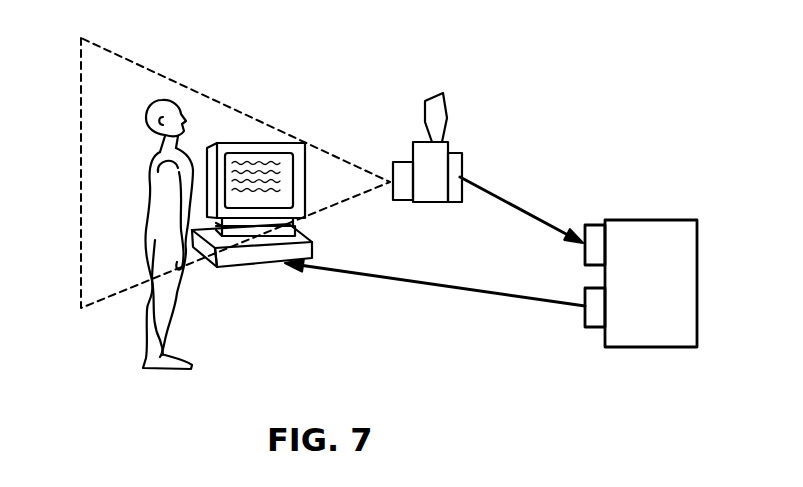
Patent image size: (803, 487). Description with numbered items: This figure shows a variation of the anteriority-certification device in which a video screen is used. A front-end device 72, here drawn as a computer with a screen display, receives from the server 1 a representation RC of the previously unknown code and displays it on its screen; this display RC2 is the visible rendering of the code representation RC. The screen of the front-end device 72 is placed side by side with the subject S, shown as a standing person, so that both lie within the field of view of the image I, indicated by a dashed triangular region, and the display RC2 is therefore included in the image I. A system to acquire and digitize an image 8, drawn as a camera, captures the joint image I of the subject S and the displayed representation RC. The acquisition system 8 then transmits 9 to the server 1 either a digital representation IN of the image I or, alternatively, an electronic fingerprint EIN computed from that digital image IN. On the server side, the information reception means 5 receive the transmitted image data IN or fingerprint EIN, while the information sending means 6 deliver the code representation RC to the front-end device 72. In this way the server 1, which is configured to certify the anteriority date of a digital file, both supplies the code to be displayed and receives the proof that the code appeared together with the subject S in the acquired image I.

The server 1 is at (675, 220).
The information reception means 5 is at (587, 224).
The information sending means 6 is at (592, 318).
The system to acquire and digitize an image 8 is at (446, 172).
The transmit 9 is at (465, 152).
The front-end device 72 is at (257, 258).
The subject S is at (103, 112).
The image I is at (77, 90).
The representation of the previously unknown code RC is at (435, 305).
The display RC2 is at (252, 150).
The digital representation of the image IN is at (521, 199).
The electronic fingerprint EIN is at (519, 248).